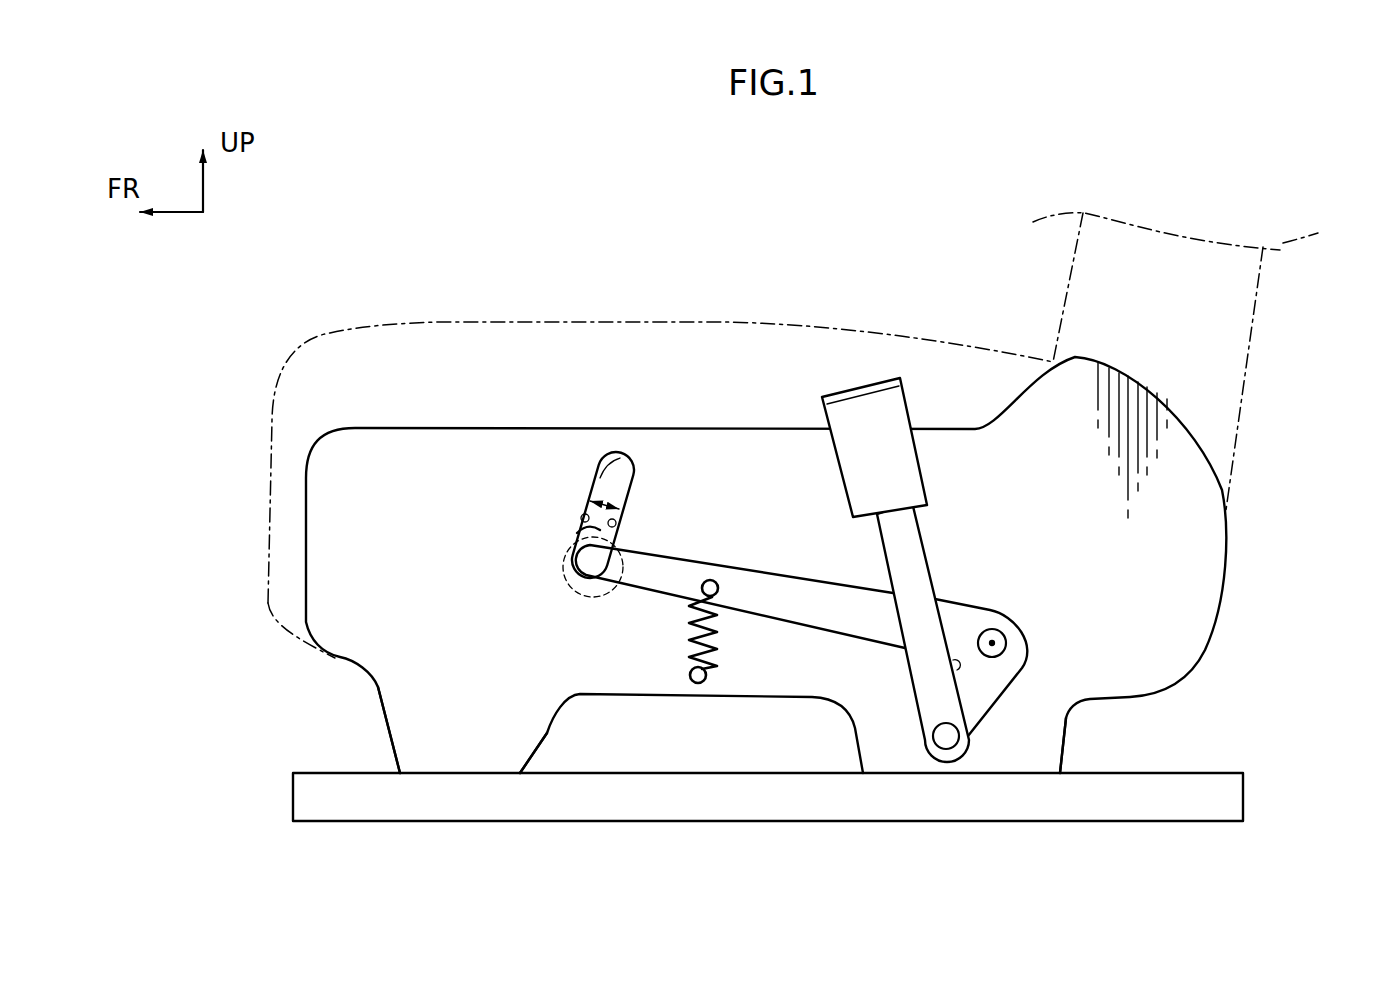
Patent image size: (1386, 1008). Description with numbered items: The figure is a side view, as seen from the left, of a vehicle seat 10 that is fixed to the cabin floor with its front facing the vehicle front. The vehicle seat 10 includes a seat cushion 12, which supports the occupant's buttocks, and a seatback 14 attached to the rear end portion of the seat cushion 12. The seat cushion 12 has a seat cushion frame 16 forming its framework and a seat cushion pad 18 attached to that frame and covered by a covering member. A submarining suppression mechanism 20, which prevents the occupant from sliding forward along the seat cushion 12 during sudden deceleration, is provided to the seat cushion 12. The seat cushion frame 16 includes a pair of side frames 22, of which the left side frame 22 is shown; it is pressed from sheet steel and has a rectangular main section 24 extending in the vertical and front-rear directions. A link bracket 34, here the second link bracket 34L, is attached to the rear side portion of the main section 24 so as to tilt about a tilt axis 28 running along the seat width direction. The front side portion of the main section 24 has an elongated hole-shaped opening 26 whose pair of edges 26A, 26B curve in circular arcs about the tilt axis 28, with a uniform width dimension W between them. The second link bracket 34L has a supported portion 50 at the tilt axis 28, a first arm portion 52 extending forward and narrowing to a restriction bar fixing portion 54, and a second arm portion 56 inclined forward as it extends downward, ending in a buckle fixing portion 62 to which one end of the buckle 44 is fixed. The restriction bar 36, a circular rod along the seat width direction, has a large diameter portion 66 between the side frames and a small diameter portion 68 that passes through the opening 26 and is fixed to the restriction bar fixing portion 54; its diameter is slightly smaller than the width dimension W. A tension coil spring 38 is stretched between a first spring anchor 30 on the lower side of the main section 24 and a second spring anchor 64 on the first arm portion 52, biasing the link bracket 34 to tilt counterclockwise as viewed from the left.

The vehicle seat 10 is at (745, 493).
The seat cushion 12 is at (263, 353).
The seatback 14 is at (1063, 290).
The seat cushion frame 16 is at (677, 565).
The seat cushion pad 18 is at (551, 320).
The submarining suppression mechanism 20 is at (397, 678).
The side frame 22 is at (308, 490).
The main section 24 is at (327, 563).
The opening 26 is at (571, 469).
The edge 26A is at (577, 518).
The edge 26B is at (612, 527).
The tilt axis 28 is at (1017, 672).
The first spring anchor 30 is at (685, 687).
The link bracket 34 is at (1144, 646).
The second link bracket 34L is at (1144, 646).
The restriction bar 36 is at (562, 588).
The spring 38 is at (728, 645).
The buckle 44 is at (934, 567).
The supported portion 50 is at (1008, 637).
The first arm portion 52 is at (767, 570).
The restriction bar fixing portion 54 is at (582, 563).
The second arm portion 56 is at (993, 713).
The buckle fixing portion 62 is at (950, 757).
The second spring anchor 64 is at (712, 580).
The large diameter portion 66 is at (587, 593).
The small diameter portion 68 is at (580, 530).
The width dimension W is at (625, 497).